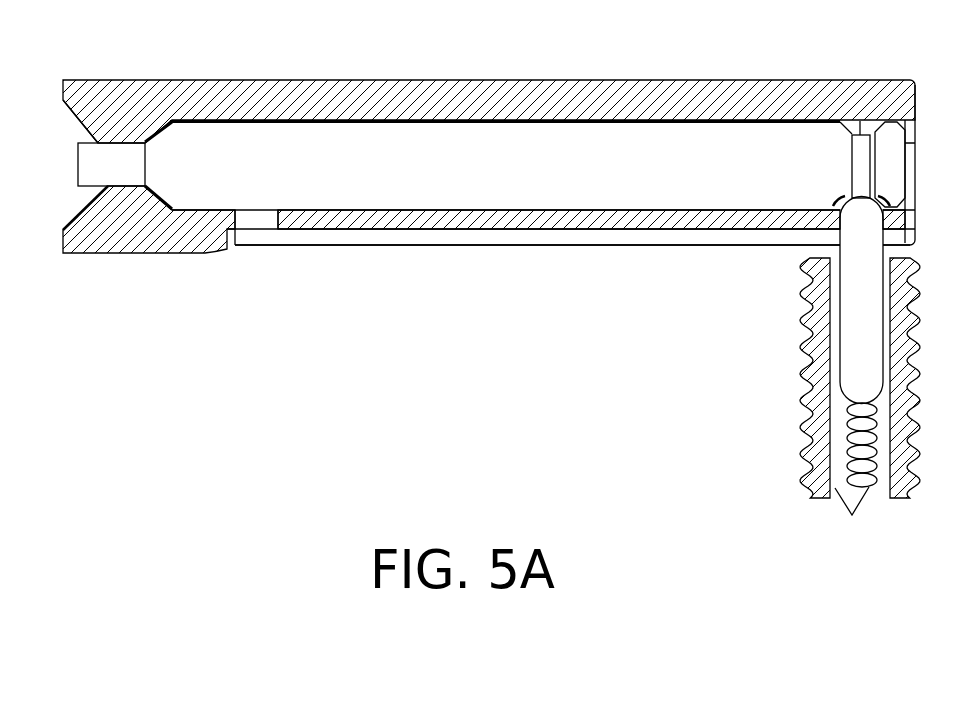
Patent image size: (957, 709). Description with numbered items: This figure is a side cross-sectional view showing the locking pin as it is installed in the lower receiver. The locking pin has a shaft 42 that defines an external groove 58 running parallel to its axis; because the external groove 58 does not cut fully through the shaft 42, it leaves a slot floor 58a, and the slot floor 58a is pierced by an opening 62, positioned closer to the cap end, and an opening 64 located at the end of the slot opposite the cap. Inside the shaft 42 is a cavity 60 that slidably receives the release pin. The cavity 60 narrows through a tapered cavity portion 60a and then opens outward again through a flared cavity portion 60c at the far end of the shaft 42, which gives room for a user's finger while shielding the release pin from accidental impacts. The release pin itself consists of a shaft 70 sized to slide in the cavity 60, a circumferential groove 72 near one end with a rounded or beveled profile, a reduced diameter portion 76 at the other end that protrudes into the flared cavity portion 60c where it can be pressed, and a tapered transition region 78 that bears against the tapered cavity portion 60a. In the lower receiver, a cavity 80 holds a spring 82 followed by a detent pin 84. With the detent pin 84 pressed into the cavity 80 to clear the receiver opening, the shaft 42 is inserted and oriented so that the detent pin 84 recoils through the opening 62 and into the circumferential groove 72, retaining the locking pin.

The shaft 42 is at (328, 90).
The external groove 58 is at (612, 240).
The slot floor 58a is at (516, 231).
The cavity 60 is at (243, 123).
The tapered cavity portion 60a is at (167, 169).
The flared cavity portion 60c is at (80, 115).
The opening 62 is at (837, 220).
The opening 64 is at (235, 214).
The shaft 70 is at (443, 150).
The circumferential groove 72 is at (858, 156).
The reduced diameter portion 76 is at (110, 167).
The transition region 78 is at (167, 169).
The cavity 80 is at (806, 328).
The spring 82 is at (857, 428).
The detent pin 84 is at (862, 327).